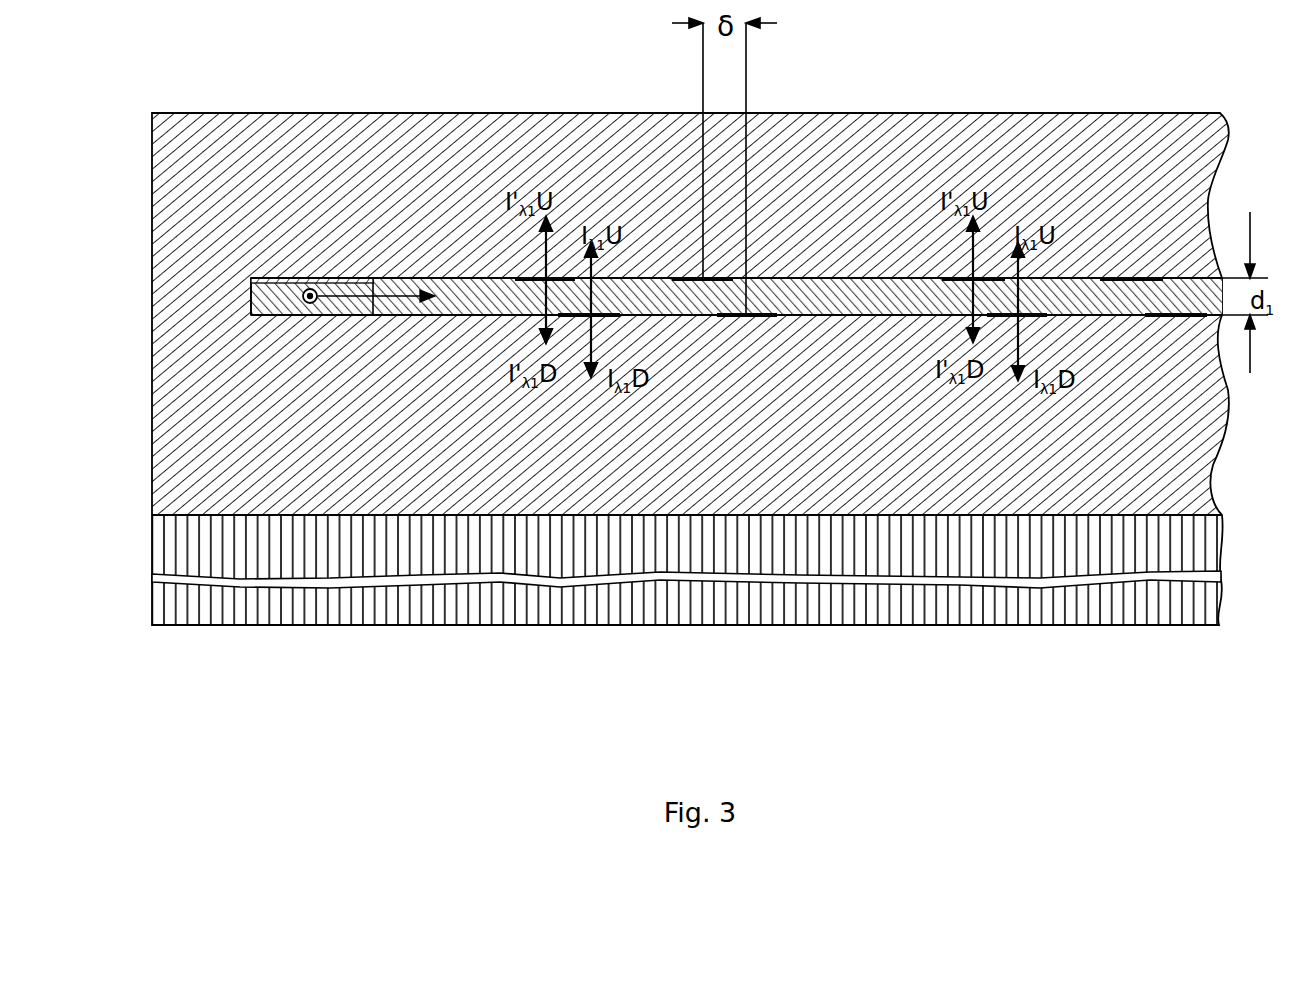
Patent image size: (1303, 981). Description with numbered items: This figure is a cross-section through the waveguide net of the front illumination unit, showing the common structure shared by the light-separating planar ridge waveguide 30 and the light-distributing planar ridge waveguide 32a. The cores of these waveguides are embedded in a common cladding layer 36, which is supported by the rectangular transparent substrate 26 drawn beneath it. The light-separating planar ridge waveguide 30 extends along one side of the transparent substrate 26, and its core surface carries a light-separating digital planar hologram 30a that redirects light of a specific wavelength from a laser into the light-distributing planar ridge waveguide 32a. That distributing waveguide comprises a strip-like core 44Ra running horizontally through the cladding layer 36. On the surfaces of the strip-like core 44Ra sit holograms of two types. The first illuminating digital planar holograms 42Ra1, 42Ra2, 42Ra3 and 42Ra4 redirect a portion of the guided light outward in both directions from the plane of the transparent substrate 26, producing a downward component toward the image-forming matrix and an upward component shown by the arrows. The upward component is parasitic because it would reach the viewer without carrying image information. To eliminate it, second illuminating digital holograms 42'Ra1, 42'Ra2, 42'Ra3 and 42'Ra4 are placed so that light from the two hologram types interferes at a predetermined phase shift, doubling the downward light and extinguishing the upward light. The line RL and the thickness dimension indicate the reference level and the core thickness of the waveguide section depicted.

The light-separating planar ridge waveguide 30 is at (265, 295).
The light-separating digital planar hologram 30a is at (343, 277).
The light-distributing planar ridge waveguide 32a is at (800, 265).
The common cladding layer 36 is at (1110, 207).
The transparent substrate 26 is at (1200, 538).
The strip-like core 44Ra is at (839, 297).
The second illuminating digital hologram 42'Ra1 is at (503, 156).
The second illuminating digital hologram 42'Ra2 is at (668, 156).
The second illuminating digital hologram 42'Ra3 is at (982, 157).
The first illuminating digital planar hologram 42Ra4 is at (1150, 277).
The first illuminating digital planar hologram 42Ra1 is at (567, 316).
The first illuminating digital planar hologram 42Ra2 is at (757, 316).
The first illuminating digital planar hologram 42Ra3 is at (1002, 316).
The second illuminating digital hologram 42'Ra4 is at (1135, 505).
The reference line RL is at (397, 316).